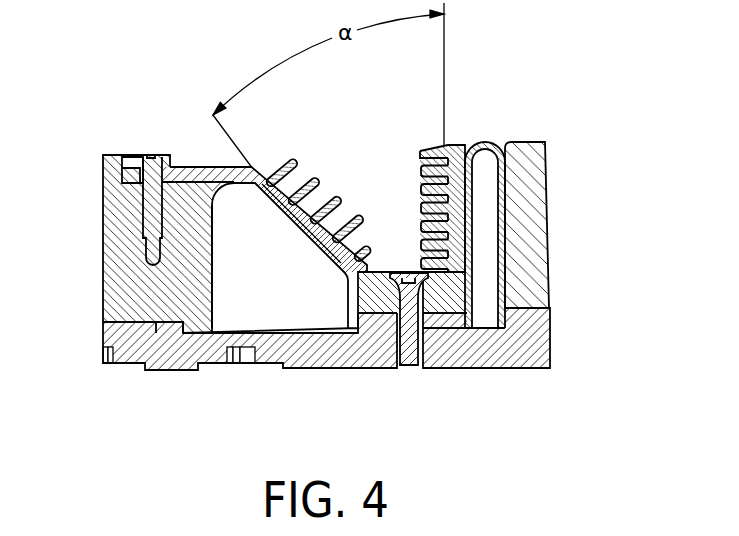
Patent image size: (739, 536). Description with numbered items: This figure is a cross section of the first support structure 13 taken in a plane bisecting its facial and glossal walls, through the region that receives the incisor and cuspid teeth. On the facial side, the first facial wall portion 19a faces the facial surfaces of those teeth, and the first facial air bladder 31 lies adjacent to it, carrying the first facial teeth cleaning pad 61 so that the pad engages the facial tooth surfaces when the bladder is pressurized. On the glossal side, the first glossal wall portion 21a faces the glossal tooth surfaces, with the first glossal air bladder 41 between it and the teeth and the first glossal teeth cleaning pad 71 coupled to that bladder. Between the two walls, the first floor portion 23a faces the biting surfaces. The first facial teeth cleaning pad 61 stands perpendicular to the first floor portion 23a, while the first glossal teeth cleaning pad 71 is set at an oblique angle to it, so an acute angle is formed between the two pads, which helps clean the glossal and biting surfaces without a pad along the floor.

The first support structure 13 is at (550, 302).
The first facial wall portion 19a is at (537, 230).
The first glossal wall portion 21a is at (117, 202).
The first floor portion 23a is at (387, 268).
The first facial air bladder 31 is at (480, 147).
The first glossal air bladder 41 is at (235, 183).
The first facial teeth cleaning pad 61 is at (450, 147).
The first glossal teeth cleaning pad 71 is at (318, 175).